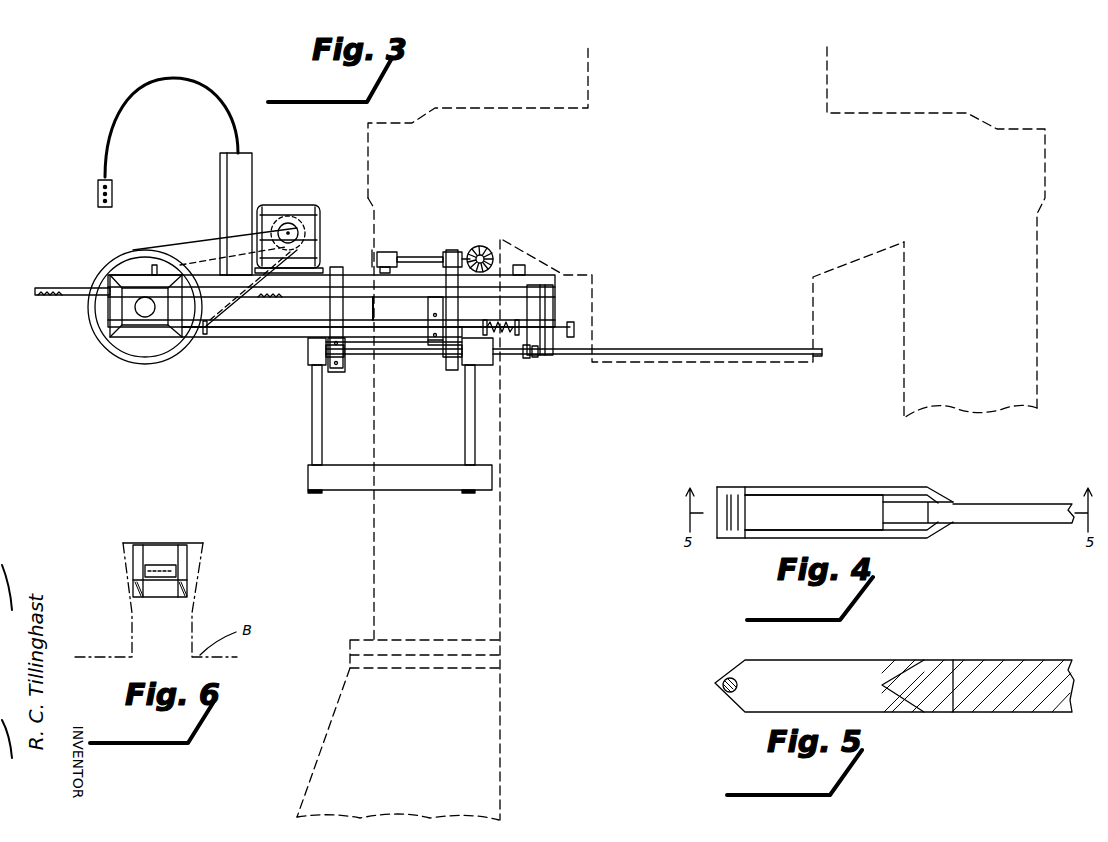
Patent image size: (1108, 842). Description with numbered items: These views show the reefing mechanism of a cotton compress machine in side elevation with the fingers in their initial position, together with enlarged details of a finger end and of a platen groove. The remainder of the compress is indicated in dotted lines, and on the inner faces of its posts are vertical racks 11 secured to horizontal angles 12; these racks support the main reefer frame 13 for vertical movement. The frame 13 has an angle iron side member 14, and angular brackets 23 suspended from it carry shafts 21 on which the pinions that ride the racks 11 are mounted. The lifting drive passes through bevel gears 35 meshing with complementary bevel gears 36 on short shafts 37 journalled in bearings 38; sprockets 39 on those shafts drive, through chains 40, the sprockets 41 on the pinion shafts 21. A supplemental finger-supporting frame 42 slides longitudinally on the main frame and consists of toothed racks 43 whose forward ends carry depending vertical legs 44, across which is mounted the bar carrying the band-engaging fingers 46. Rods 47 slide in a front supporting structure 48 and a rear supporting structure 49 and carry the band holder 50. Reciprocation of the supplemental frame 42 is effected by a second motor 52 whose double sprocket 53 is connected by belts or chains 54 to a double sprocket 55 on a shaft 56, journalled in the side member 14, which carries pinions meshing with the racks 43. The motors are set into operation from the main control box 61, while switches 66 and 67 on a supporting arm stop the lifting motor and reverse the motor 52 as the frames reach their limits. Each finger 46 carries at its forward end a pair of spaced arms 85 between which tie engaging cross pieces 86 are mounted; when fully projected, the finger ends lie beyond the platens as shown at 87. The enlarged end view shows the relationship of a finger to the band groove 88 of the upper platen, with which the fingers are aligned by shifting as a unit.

In FIG. 3, the vertical racks 11 is at (312, 410).
In FIG. 3, the horizontal angles 12 is at (310, 357).
In FIG. 3, the main reefer frame 13 is at (536, 260).
In FIG. 3, the side member 14 is at (360, 275).
In FIG. 3, the shafts 21 is at (410, 358).
In FIG. 3, the angular brackets 23 is at (330, 310).
In FIG. 3, the bevel gears 35 is at (485, 252).
In FIG. 3, the complementary bevel gears 36 is at (480, 246).
In FIG. 3, the short shafts 37 is at (415, 257).
In FIG. 3, the bearings 38 is at (387, 252).
In FIG. 3, the sprockets 39 is at (371, 250).
In FIG. 3, the chains 40 is at (372, 313).
In FIG. 3, the sprockets 41 is at (370, 352).
In FIG. 3, the supplemental finger-supporting frame 42 is at (421, 306).
In FIG. 3, the toothed racks 43 is at (52, 288).
In FIG. 3, the vertical legs 44 is at (440, 346).
In FIG. 3, the band-engaging fingers 46 is at (568, 356).
In FIG. 4, the band-engaging fingers 46 is at (1030, 523).
In FIG. 5, the band-engaging fingers 46 is at (1008, 668).
In FIG. 3, the rods 47 is at (273, 327).
In FIG. 3, the front supporting structure 48 is at (553, 300).
In FIG. 3, the rear supporting structure 49 is at (111, 320).
In FIG. 3, the band holder 50 is at (576, 330).
In FIG. 3, the second motor 52 is at (283, 212).
In FIG. 3, the double sprocket 53 is at (301, 208).
In FIG. 3, the belts or chains 54 is at (197, 240).
In FIG. 3, the double sprocket 55 is at (116, 256).
In FIG. 3, the shaft 56 is at (135, 307).
In FIG. 3, the main control box 61 is at (113, 186).
In FIG. 3, the switch 66 is at (535, 358).
In FIG. 3, the switch 67 is at (527, 358).
In FIG. 4, the spaced arms 85 is at (788, 532).
In FIG. 5, the spaced arms 85 is at (745, 670).
In FIG. 6, the spaced arms 85 is at (138, 553).
In FIG. 4, the tie engaging cross pieces 86 is at (735, 495).
In FIG. 5, the tie engaging cross pieces 86 is at (723, 692).
In FIG. 6, the tie engaging cross pieces 86 is at (160, 568).
In FIG. 3, the projected finger end position 87 is at (822, 356).
In FIG. 6, the band groove 88 is at (197, 565).